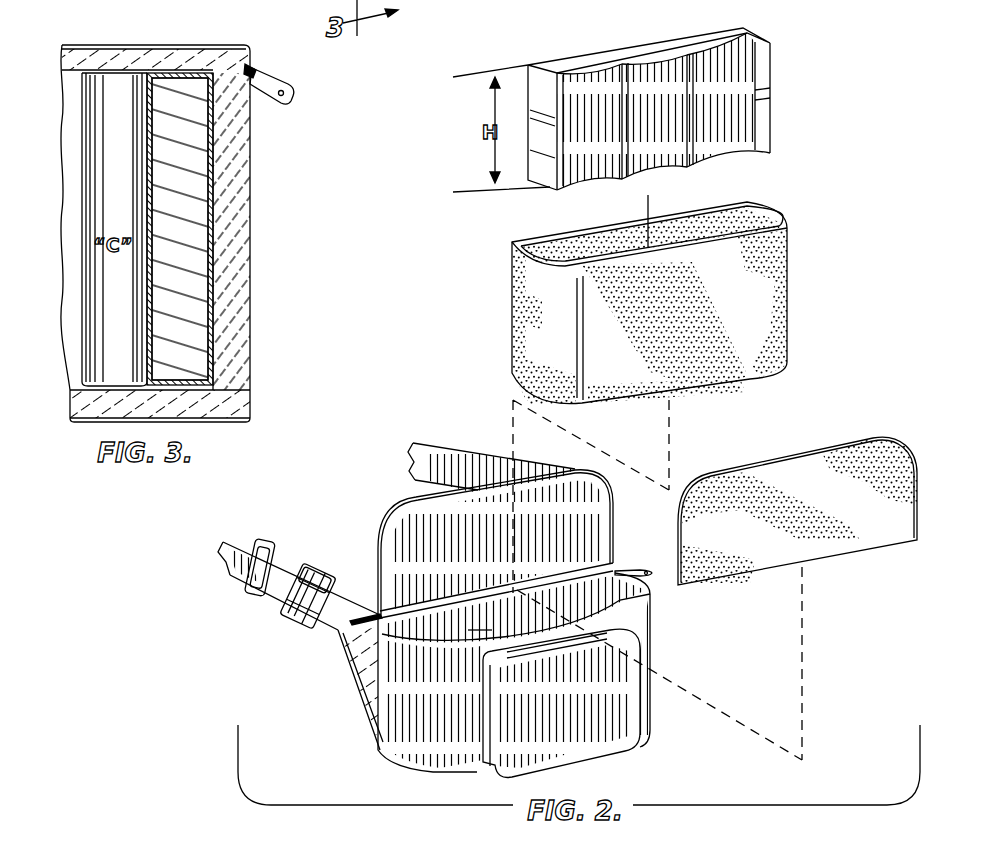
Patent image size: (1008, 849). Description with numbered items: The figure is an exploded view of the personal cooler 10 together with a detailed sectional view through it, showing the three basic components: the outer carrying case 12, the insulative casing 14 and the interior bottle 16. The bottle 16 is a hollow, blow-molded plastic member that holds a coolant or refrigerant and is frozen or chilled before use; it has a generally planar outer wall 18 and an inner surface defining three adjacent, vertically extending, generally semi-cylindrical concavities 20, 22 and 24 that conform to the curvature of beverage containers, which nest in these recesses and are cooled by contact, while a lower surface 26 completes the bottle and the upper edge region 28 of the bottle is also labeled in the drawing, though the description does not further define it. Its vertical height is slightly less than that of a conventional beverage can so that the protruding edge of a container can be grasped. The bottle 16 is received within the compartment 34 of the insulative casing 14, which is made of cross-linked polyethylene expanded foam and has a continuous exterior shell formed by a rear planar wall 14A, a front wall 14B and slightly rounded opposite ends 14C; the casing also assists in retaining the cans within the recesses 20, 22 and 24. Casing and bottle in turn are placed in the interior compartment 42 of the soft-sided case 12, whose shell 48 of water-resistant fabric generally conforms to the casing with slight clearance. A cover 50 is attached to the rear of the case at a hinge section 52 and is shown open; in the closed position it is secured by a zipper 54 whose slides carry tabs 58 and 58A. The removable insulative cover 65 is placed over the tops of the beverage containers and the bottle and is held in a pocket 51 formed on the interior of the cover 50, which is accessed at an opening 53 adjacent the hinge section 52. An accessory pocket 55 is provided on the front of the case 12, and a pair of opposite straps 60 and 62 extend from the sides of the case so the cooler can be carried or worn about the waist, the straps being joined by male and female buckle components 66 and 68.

In FIG. 3, the cooler 10 is at (272, 195).
In FIG. 3, the outer carrying case 12 is at (255, 227).
In FIG. 2, the outer carrying case 12 is at (397, 728).
In FIG. 3, the insulative casing 14 is at (238, 313).
In FIG. 2, the insulative casing 14 is at (733, 344).
In FIG. 2, the rear planar wall 14A is at (622, 235).
In FIG. 2, the front wall 14B is at (760, 297).
In FIG. 2, the opposite ends 14C is at (536, 280).
In FIG. 3, the bottle 16 is at (190, 282).
In FIG. 2, the bottle 16 is at (770, 97).
In FIG. 2, the outer wall 18 is at (543, 63).
In FIG. 2, the concavity 20 is at (592, 75).
In FIG. 2, the concavity 22 is at (652, 66).
In FIG. 2, the concavity 24 is at (716, 52).
In FIG. 2, the lower surface 26 is at (548, 190).
In FIG. 2, the panel top edge 28 is at (752, 33).
In FIG. 2, the compartment 34 is at (692, 238).
In FIG. 2, the interior compartment 42 is at (479, 619).
In FIG. 3, the shell 48 is at (250, 352).
In FIG. 3, the cover 50 is at (221, 54).
In FIG. 2, the cover 50 is at (545, 513).
In FIG. 2, the pocket 51 is at (562, 570).
In FIG. 2, the hinge section 52 is at (380, 614).
In FIG. 2, the opening 53 is at (583, 567).
In FIG. 3, the zipper 54 is at (252, 70).
In FIG. 2, the pocket 55 is at (623, 700).
In FIG. 3, the tab 58 is at (292, 98).
In FIG. 2, the tab 58 is at (366, 626).
In FIG. 3, the tab 58A is at (286, 79).
In FIG. 2, the tab 58A is at (653, 573).
In FIG. 2, the strap 60 is at (327, 630).
In FIG. 2, the strap 62 is at (467, 446).
In FIG. 3, the removable insulative cover 65 is at (196, 54).
In FIG. 2, the removable insulative cover 65 is at (803, 548).
In FIG. 2, the male buckle component 66 is at (283, 602).
In FIG. 2, the female buckle component 68 is at (322, 575).